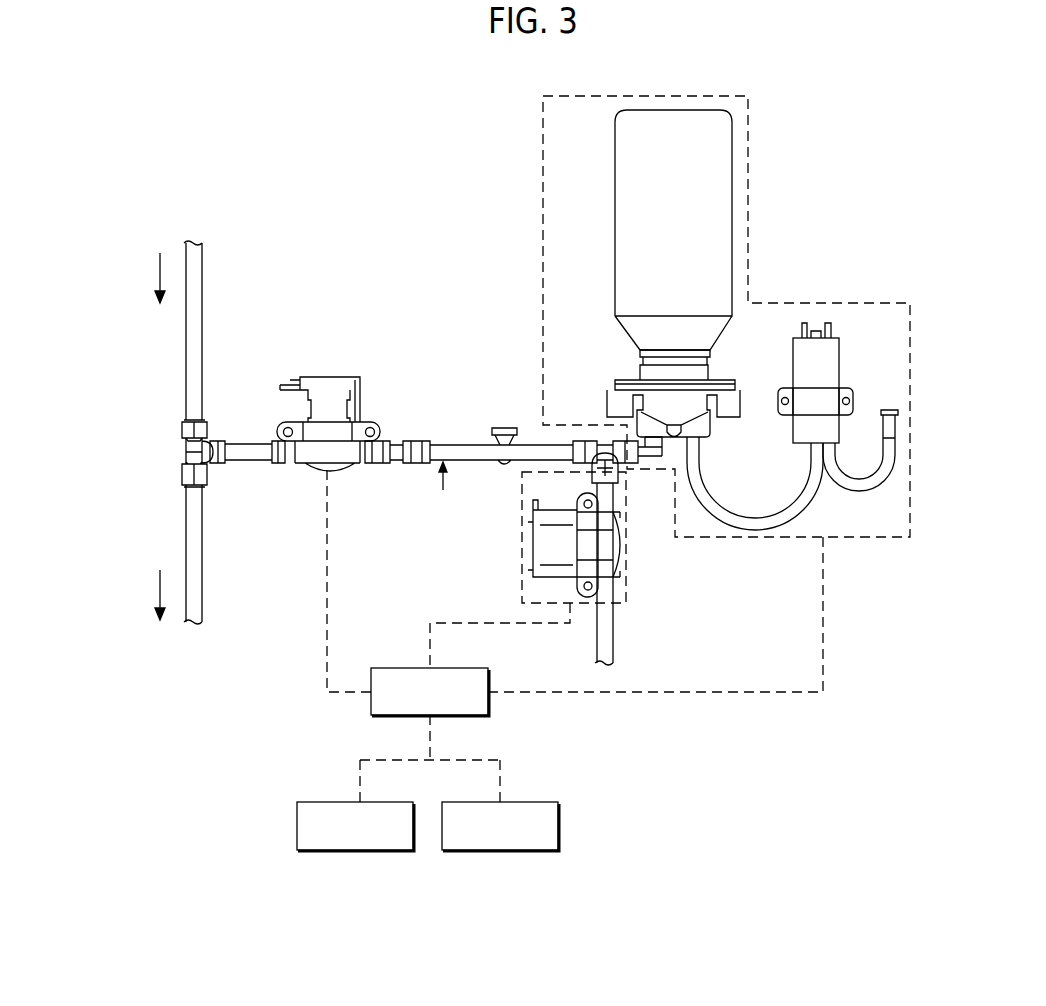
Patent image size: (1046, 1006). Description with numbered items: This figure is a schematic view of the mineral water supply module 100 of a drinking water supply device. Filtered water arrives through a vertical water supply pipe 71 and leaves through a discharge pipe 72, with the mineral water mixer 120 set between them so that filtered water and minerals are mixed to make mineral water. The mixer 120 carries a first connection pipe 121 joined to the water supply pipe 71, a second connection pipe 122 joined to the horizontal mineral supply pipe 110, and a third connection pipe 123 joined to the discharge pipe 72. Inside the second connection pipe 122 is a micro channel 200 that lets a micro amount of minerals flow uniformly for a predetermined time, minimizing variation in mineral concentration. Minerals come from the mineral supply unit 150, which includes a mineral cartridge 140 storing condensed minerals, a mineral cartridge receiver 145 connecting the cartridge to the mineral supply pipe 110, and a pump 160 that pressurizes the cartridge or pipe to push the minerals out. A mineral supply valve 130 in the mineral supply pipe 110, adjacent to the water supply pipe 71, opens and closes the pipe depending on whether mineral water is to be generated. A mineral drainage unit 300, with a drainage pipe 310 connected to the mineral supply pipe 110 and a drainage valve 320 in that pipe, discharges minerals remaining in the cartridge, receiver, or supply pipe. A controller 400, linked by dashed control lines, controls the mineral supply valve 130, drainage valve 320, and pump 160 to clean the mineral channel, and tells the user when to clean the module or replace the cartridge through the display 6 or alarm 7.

The mineral water supply module 100 is at (810, 142).
The mineral supply pipe 110 is at (501, 483).
The mineral water mixer 120 is at (176, 449).
The first connection pipe 121 is at (188, 428).
The second connection pipe 122 is at (216, 440).
The third connection pipe 123 is at (188, 478).
The mineral supply valve 130 is at (330, 408).
The mineral cartridge 140 is at (623, 186).
The mineral cartridge receiver 145 is at (612, 398).
The mineral supply unit 150 is at (750, 228).
The pump 160 is at (830, 361).
The micro channel 200 is at (248, 463).
The mineral drainage unit 300 is at (626, 588).
The drainage pipe 310 is at (612, 505).
The drainage valve 320 is at (525, 556).
The controller 400 is at (490, 705).
The display 6 is at (297, 826).
The alarm unit 7 is at (560, 827).
The water supply pipe 71 is at (185, 328).
The discharge pipe 72 is at (185, 556).